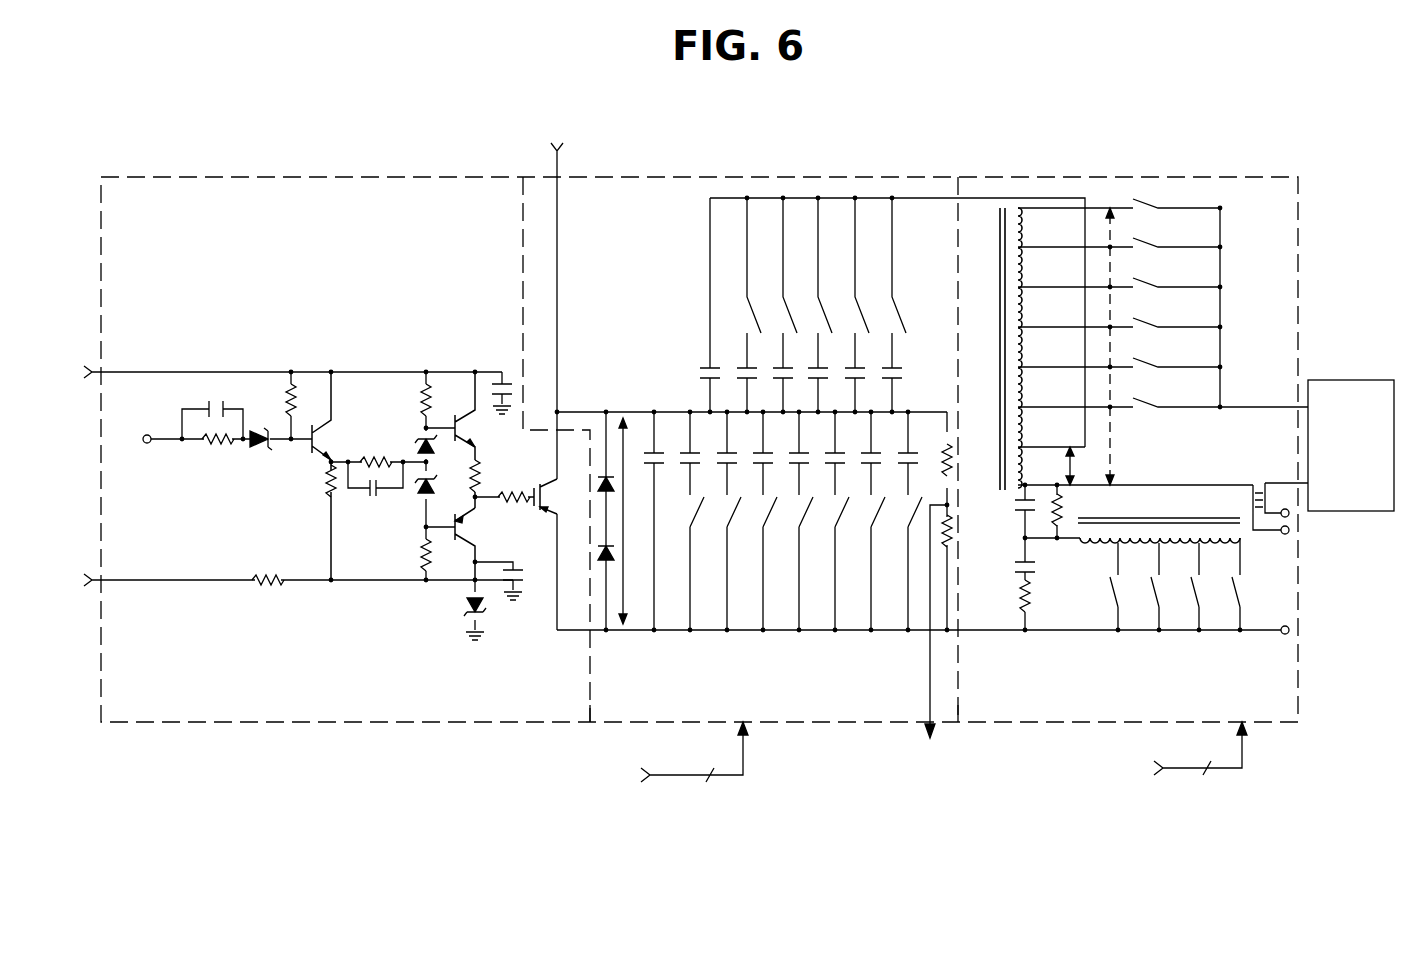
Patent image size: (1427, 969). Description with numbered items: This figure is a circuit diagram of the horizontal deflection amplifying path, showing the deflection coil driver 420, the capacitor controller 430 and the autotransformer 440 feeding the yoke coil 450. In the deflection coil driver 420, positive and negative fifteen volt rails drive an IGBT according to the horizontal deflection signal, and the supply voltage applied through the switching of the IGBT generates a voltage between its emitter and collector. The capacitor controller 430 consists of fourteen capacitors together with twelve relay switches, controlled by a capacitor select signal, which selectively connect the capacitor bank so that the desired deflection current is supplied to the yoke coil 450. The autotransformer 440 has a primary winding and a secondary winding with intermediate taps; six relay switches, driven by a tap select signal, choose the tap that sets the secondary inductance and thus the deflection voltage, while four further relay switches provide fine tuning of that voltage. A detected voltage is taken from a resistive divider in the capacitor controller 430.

The deflection coil driver 420 is at (345, 177).
The capacitor controller 430 is at (708, 177).
The autotransformer 440 is at (1230, 177).
The yoke coil 450 is at (1357, 380).